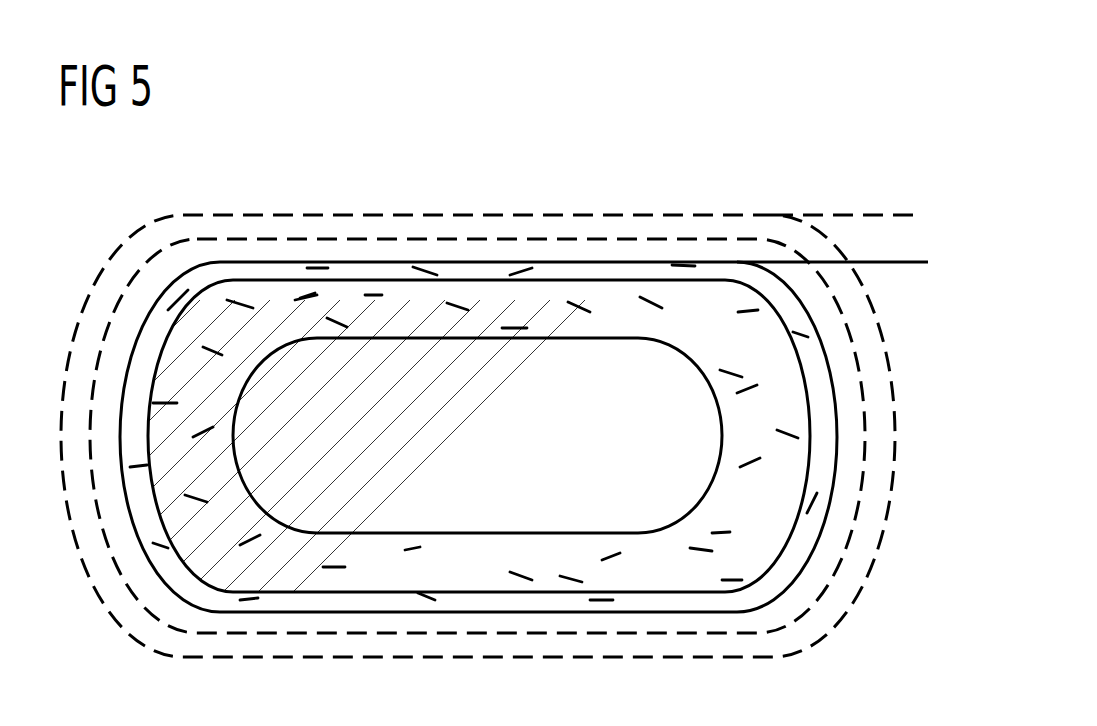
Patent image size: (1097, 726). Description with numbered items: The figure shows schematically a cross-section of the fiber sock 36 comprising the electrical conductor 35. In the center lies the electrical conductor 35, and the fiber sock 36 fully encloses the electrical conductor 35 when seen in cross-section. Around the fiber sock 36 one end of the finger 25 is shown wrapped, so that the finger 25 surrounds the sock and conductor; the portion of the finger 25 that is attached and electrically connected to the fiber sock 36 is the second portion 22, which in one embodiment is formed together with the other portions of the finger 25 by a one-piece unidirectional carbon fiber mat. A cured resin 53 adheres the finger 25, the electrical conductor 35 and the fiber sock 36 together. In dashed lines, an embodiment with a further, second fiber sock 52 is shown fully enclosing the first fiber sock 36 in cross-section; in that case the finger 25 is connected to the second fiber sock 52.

The second portion 22 is at (835, 216).
The finger 25 is at (917, 263).
The electrical conductor 35 is at (313, 533).
The fiber sock 36 is at (280, 278).
The second fiber sock 52 is at (338, 238).
The cured resin 53 is at (520, 579).